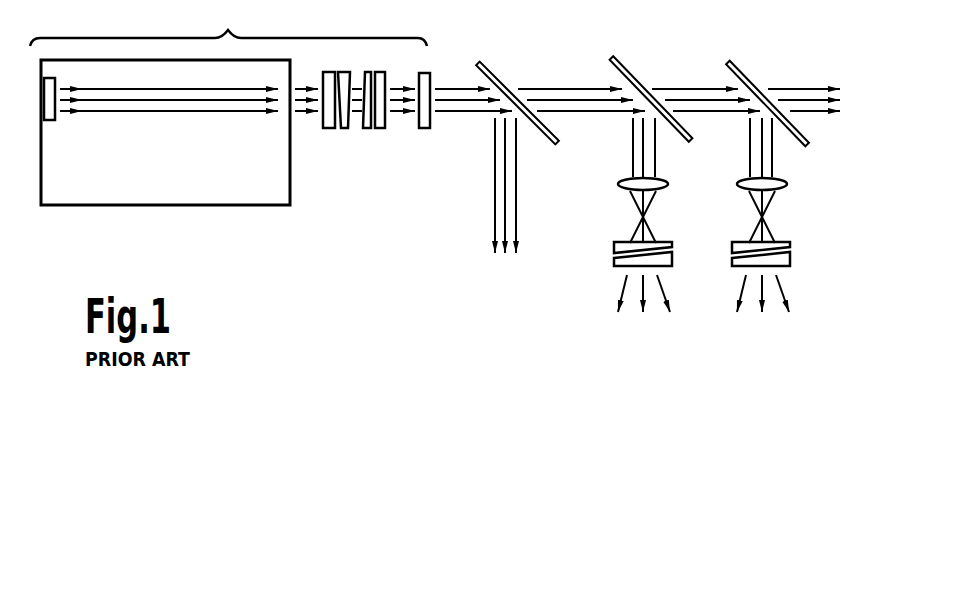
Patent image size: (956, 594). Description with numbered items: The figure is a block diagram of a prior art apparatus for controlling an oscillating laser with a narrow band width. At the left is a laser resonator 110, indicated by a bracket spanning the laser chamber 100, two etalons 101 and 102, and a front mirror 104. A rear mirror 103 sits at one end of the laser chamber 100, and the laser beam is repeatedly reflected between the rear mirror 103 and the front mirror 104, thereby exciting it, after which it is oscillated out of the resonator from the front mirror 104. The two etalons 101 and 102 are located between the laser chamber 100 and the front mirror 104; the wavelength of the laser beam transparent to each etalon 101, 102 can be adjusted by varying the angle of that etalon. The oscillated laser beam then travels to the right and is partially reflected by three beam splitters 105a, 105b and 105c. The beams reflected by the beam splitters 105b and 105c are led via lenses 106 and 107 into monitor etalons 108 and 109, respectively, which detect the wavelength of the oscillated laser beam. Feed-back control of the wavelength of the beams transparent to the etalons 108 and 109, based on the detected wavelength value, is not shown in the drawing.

The laser chamber 100 is at (217, 207).
The etalon 101 is at (324, 128).
The etalon 102 is at (370, 128).
The rear mirror 103 is at (43, 112).
The front mirror 104 is at (426, 66).
The beam splitter 105a is at (500, 80).
The beam splitter 105b is at (632, 74).
The beam splitter 105c is at (752, 78).
The lens 106 is at (667, 185).
The lens 107 is at (786, 185).
The monitor etalon 108 is at (673, 258).
The monitor etalon 109 is at (791, 258).
The laser resonator 110 is at (228, 23).